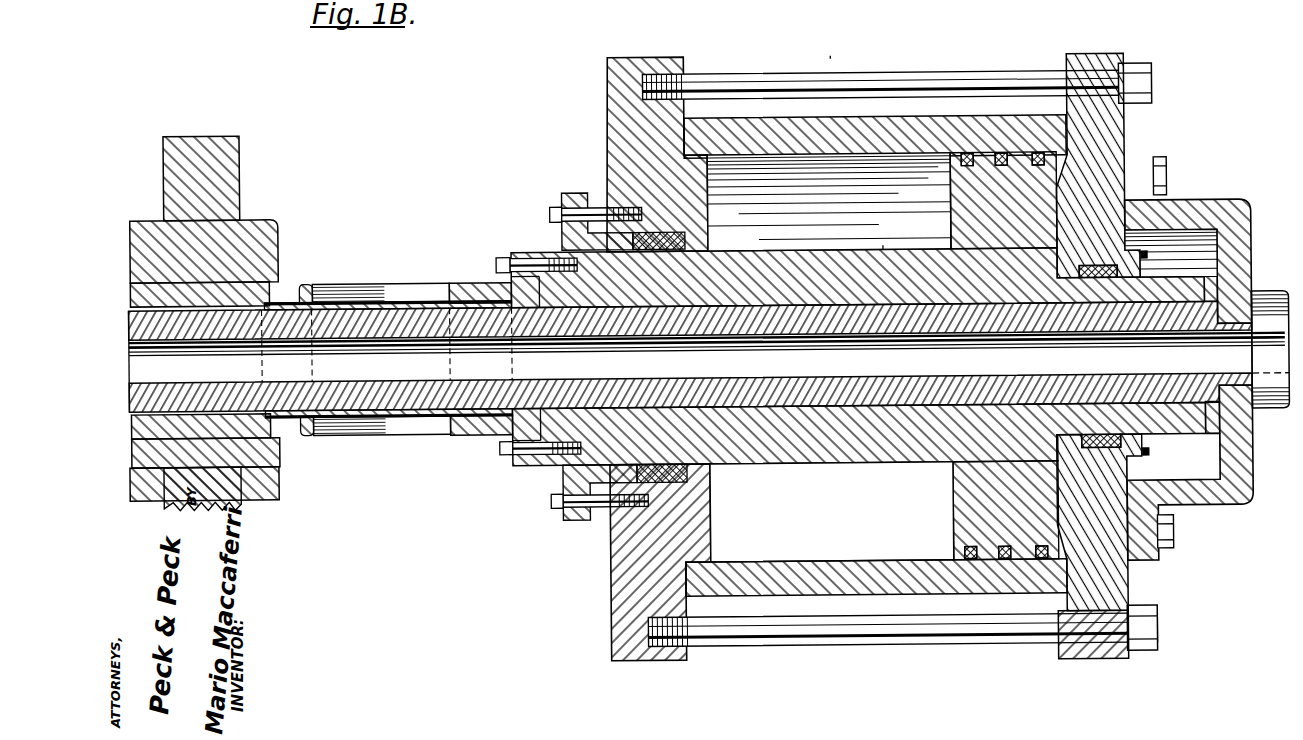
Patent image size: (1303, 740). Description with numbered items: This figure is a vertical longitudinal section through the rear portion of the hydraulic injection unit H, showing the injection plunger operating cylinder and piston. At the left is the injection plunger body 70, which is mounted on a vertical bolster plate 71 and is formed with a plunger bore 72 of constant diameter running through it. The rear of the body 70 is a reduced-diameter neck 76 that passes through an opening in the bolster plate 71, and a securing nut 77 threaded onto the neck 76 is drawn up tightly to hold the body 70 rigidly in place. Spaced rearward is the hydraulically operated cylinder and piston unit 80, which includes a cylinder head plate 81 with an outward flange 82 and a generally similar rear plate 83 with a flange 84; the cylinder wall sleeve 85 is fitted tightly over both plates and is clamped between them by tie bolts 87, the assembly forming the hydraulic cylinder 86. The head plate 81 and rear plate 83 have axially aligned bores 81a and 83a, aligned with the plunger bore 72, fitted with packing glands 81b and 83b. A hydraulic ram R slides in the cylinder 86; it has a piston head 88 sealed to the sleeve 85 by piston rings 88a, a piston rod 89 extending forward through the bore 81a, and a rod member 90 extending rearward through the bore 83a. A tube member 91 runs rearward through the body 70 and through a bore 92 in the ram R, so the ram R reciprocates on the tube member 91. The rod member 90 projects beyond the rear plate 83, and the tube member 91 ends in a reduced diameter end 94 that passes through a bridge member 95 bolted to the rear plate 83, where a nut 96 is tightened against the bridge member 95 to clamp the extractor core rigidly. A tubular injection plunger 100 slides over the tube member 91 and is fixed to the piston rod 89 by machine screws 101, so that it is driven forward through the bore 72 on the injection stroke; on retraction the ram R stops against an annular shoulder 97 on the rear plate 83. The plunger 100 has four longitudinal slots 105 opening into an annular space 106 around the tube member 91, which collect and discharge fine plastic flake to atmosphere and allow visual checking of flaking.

The injection plunger body 70 is at (150, 213).
The bolster plate 71 is at (238, 165).
The plunger bore 72 is at (218, 441).
The neck 76 is at (268, 272).
The securing nut 77 is at (281, 228).
The cylinder and piston unit 80 is at (607, 127).
The cylinder head plate 81 is at (702, 520).
The bore in head plate 81a is at (700, 246).
The packing gland 81b is at (560, 481).
The flange of head plate 82 is at (611, 657).
The rear plate 83 is at (1112, 542).
The bore in rear plate 83a is at (1076, 276).
The packing gland 83b is at (1147, 443).
The flange of rear plate 84 is at (1113, 660).
The cylinder wall sleeve 85 is at (904, 120).
The hydraulic cylinder 86 is at (864, 598).
The tie bolts 87 is at (950, 76).
The piston head 88 is at (1047, 183).
The piston rings 88a is at (962, 548).
The piston rod 89 is at (790, 251).
The rod member 90 is at (1222, 281).
The tube member 91 is at (352, 312).
The bore of ram 92 is at (836, 304).
The reduced diameter end 94 is at (1238, 320).
The bridge member 95 is at (1253, 482).
The nut 96 is at (1271, 410).
The shoulder 97 is at (1133, 160).
The tubular injection plunger 100 is at (459, 281).
The machine screws 101 is at (529, 257).
The slots 105 is at (411, 283).
The annular space 106 is at (305, 284).
The injection unit H is at (833, 57).
The hydraulic ram R is at (880, 243).